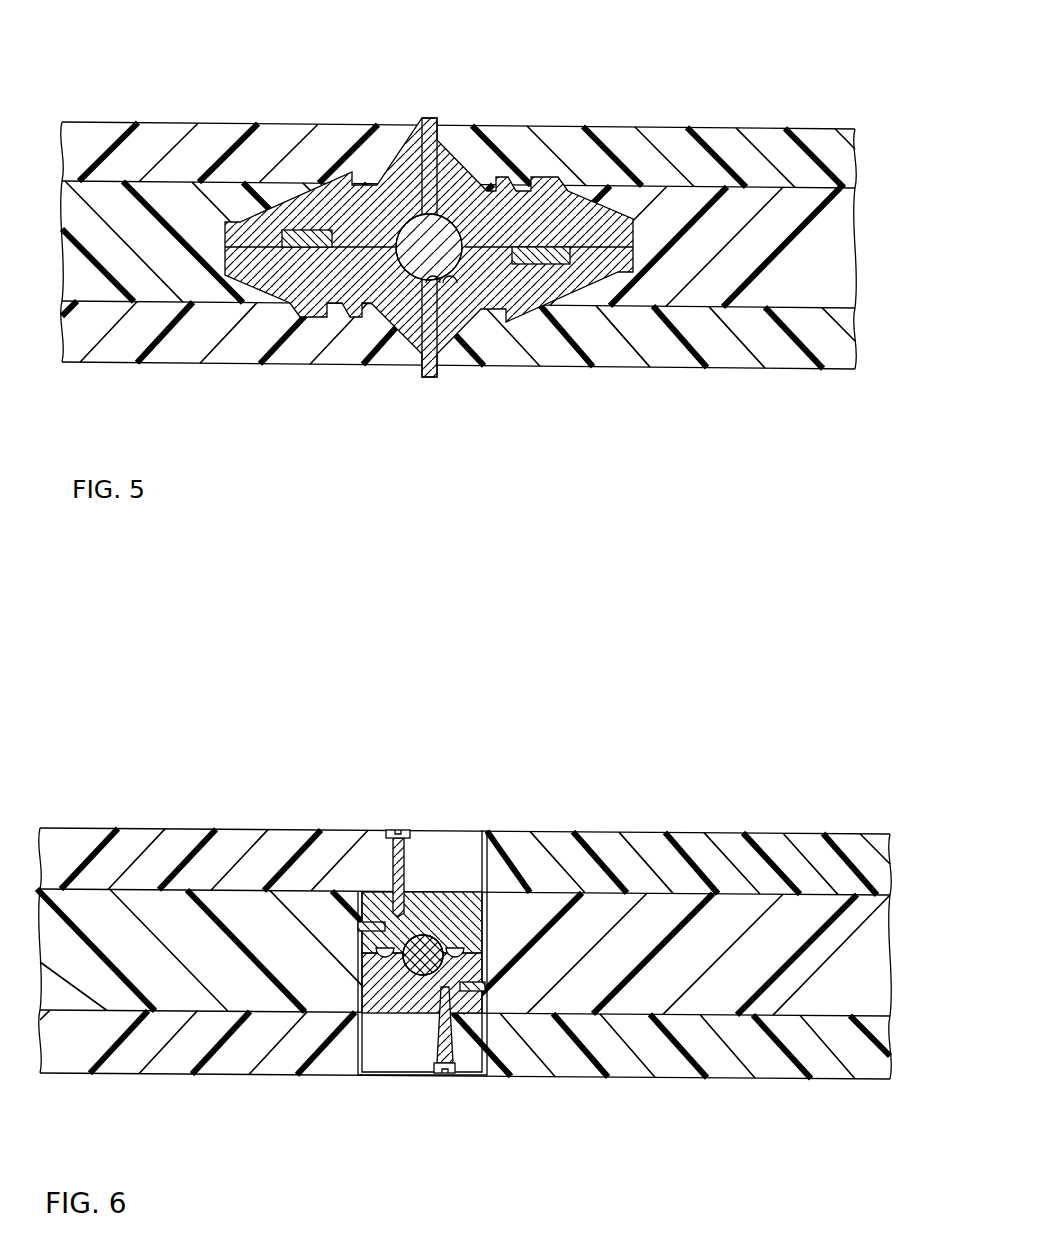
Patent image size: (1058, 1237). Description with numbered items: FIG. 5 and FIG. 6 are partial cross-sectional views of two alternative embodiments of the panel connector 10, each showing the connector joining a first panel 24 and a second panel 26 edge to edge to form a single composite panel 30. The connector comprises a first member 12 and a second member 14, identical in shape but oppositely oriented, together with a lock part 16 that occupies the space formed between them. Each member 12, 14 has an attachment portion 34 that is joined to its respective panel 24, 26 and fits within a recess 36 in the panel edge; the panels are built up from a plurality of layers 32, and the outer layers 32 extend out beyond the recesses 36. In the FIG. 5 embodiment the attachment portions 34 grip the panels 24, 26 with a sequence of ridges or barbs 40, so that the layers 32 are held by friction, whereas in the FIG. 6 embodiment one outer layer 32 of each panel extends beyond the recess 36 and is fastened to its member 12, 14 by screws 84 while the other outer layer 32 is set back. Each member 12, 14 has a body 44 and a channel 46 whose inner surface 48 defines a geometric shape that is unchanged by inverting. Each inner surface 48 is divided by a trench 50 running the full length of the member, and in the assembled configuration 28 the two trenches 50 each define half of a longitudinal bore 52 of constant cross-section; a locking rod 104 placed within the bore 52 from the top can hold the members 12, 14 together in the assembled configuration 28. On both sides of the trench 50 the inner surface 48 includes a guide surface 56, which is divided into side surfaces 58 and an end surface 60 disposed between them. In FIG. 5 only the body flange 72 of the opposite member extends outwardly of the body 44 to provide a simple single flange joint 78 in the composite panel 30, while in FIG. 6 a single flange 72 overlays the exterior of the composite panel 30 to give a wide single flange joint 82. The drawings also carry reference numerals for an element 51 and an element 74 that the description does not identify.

In FIG. 5, the panel connector 10 is at (445, 247).
In FIG. 5, the first member 12 is at (290, 210).
In FIG. 6, the first member 12 is at (375, 905).
In FIG. 5, the second member 14 is at (492, 195).
In FIG. 6, the second member 14 is at (475, 1010).
In FIG. 5, the lock part 16 is at (440, 150).
In FIG. 5, the first panel 24 is at (170, 160).
In FIG. 6, the first panel 24 is at (133, 830).
In FIG. 5, the second panel 26 is at (752, 128).
In FIG. 6, the second panel 26 is at (787, 830).
In FIG. 5, the assembled configuration 28 is at (160, 340).
In FIG. 6, the assembled configuration 28 is at (175, 1050).
In FIG. 5, the composite panel 30 is at (657, 393).
In FIG. 6, the composite panel 30 is at (733, 1106).
In FIG. 5, the layers 32 is at (150, 178).
In FIG. 6, the layers 32 is at (95, 830).
In FIG. 5, the attachment portion 34 is at (600, 225).
In FIG. 6, the attachment portion 34 is at (360, 930).
In FIG. 5, the recess 36 is at (620, 240).
In FIG. 6, the recess 36 is at (487, 950).
In FIG. 5, the ridges or barbs 40 is at (335, 190).
In FIG. 5, the body 44 is at (505, 200).
In FIG. 6, the body 44 is at (380, 925).
In FIG. 5, the channel 46 is at (250, 240).
In FIG. 5, the inner surface 48 is at (245, 230).
In FIG. 6, the inner surface 48 is at (432, 880).
In FIG. 5, the trench 50 is at (390, 340).
In FIG. 6, the trench 50 is at (360, 1000).
In FIG. 6, the bore 51 is at (452, 890).
In FIG. 5, the longitudinal bore 52 is at (455, 330).
In FIG. 6, the longitudinal bore 52 is at (410, 1030).
In FIG. 5, the guide surface 56 is at (300, 188).
In FIG. 6, the guide surface 56 is at (470, 880).
In FIG. 5, the side surfaces 58 is at (350, 235).
In FIG. 5, the end surface 60 is at (640, 250).
In FIG. 6, the end surface 60 is at (500, 905).
In FIG. 5, the body flange 72 is at (432, 290).
In FIG. 6, the body flange 72 is at (460, 940).
In FIG. 5, the channel 74 is at (480, 330).
In FIG. 5, the single flange joint 78 is at (432, 362).
In FIG. 6, the single flange joint 78 is at (440, 880).
In FIG. 6, the wide single flange joint 82 is at (370, 1030).
In FIG. 6, the screws 84 is at (362, 925).
In FIG. 6, the locking rod 104 is at (587, 830).